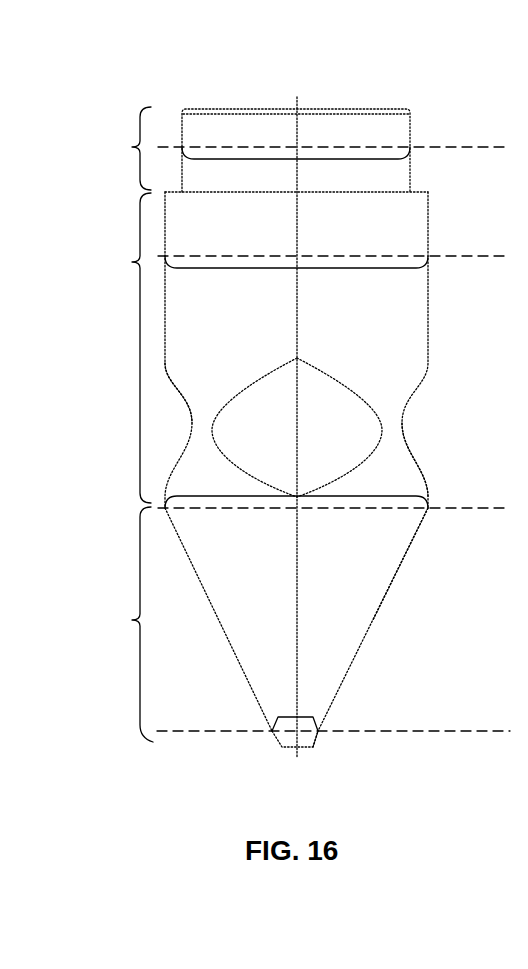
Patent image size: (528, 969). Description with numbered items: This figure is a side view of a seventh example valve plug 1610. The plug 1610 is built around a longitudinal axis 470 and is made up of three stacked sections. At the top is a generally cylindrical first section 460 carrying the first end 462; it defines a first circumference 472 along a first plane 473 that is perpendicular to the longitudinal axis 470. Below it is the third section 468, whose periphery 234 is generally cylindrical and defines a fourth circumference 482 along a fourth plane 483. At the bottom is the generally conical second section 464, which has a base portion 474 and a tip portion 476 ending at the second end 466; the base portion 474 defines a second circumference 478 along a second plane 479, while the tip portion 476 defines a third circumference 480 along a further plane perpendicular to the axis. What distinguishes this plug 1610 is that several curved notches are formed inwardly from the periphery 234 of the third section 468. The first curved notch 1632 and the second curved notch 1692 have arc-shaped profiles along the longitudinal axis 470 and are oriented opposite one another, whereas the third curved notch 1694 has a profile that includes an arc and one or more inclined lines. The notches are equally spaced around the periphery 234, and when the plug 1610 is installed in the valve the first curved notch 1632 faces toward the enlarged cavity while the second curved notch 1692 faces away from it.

The seventh example valve plug 1610 is at (463, 67).
The first end 462 is at (330, 109).
The first circumference 472 is at (345, 160).
The first plane 473 is at (445, 147).
The first section 460 is at (132, 147).
The third section 468 is at (132, 262).
The second section 464 is at (132, 620).
The periphery 234 is at (428, 316).
The fourth circumference 482 is at (353, 269).
The fourth plane 483 is at (445, 256).
The second curved notch 1692 is at (180, 382).
The first curved notch 1632 is at (410, 462).
The third curved notch 1694 is at (332, 375).
The second circumference 478 is at (215, 496).
The second plane 479 is at (450, 508).
The longitudinal axis 470 is at (297, 652).
The base portion 474 is at (420, 527).
The third circumference 480 is at (312, 717).
The second end 466 is at (288, 748).
The tip portion 476 is at (313, 742).